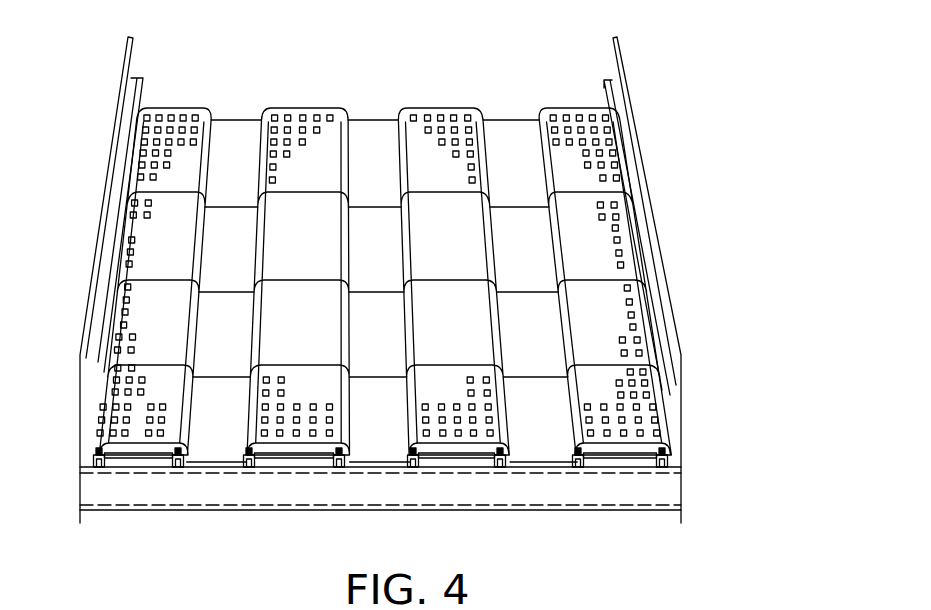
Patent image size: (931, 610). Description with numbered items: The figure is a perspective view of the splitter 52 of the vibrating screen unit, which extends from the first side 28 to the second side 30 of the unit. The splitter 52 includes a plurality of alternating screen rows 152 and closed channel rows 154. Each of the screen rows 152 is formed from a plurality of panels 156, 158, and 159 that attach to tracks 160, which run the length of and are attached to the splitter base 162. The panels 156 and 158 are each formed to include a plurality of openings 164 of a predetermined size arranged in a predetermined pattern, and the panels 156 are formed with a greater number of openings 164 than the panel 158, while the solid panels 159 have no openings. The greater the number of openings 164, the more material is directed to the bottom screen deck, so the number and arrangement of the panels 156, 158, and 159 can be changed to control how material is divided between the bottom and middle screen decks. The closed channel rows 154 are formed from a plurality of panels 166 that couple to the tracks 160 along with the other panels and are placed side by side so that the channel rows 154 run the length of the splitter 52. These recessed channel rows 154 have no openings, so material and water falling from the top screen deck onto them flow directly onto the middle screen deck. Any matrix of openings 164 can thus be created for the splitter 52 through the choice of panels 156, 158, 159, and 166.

The splitter 52 is at (347, 58).
The first side 28 is at (115, 108).
The second side 30 is at (633, 117).
The closed channel rows 154 is at (503, 118).
The panels 156 is at (460, 437).
The panel 158 is at (607, 303).
The solid panels 159 is at (468, 333).
The tracks 160 is at (590, 472).
The splitter base 162 is at (660, 513).
The openings 164 is at (655, 393).
The panels 166 is at (548, 423).
The screen rows 152 is at (630, 455).